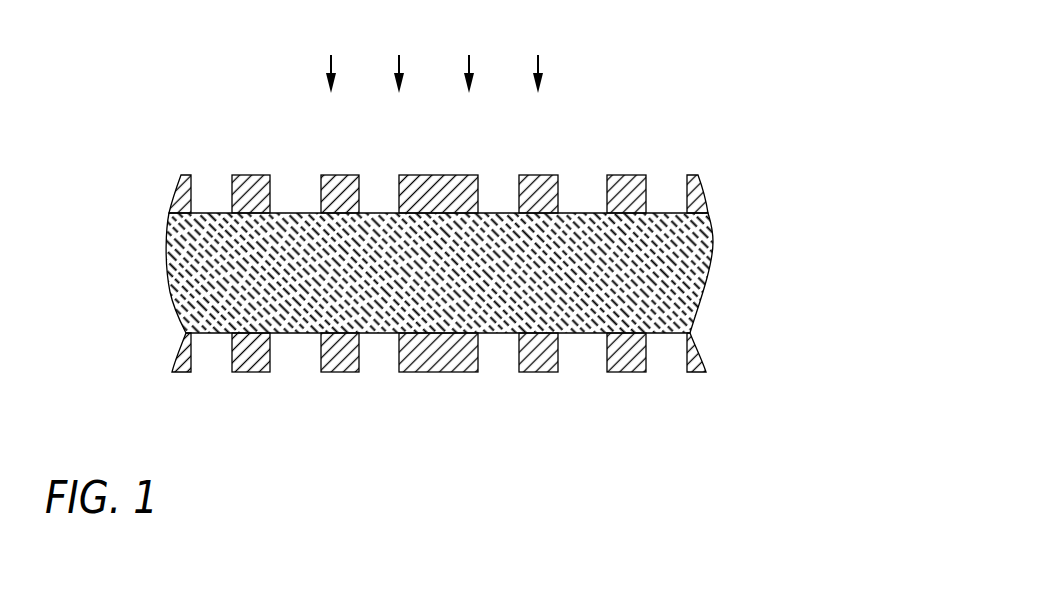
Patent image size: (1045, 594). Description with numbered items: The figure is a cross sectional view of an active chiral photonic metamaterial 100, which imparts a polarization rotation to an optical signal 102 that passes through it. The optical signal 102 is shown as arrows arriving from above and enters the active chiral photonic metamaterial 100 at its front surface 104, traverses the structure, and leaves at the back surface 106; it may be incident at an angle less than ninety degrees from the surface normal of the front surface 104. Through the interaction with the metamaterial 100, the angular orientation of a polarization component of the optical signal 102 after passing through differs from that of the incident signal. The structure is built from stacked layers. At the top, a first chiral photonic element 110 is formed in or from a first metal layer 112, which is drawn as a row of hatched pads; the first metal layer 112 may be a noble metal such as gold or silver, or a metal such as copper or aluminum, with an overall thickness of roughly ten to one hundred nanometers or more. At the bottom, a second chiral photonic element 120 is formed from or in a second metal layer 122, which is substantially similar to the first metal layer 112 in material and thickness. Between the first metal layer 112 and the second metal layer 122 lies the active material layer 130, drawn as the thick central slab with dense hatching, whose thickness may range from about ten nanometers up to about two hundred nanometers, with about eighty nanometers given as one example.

The active chiral photonic metamaterial 100 is at (713, 57).
The optical signal 102 is at (542, 63).
The front surface 104 is at (246, 163).
The back surface 106 is at (246, 384).
The first chiral photonic element 110 is at (578, 165).
The first metal layer 112 is at (727, 193).
The second chiral photonic element 120 is at (578, 382).
The second metal layer 122 is at (727, 352).
The active material layer 130 is at (705, 272).